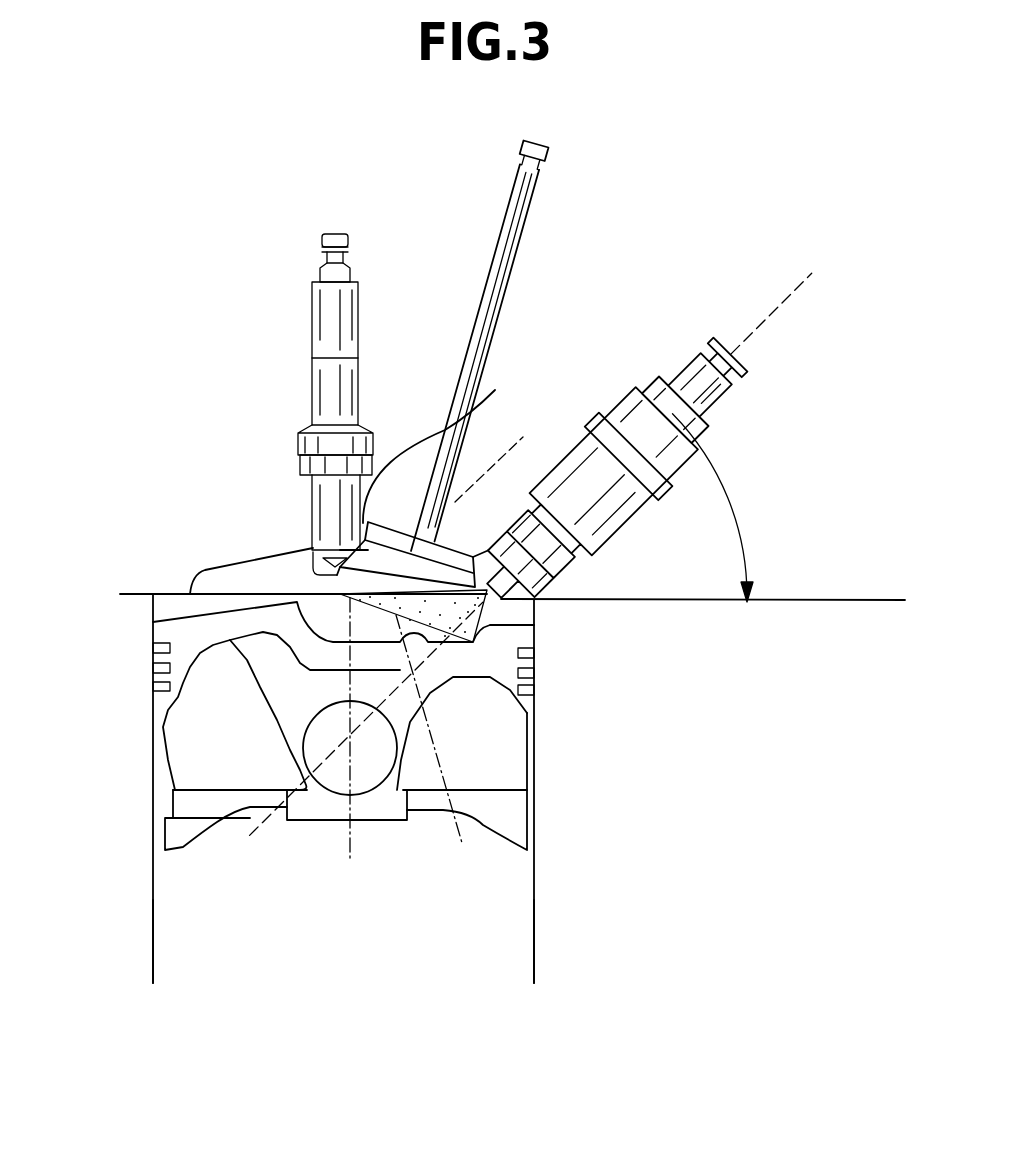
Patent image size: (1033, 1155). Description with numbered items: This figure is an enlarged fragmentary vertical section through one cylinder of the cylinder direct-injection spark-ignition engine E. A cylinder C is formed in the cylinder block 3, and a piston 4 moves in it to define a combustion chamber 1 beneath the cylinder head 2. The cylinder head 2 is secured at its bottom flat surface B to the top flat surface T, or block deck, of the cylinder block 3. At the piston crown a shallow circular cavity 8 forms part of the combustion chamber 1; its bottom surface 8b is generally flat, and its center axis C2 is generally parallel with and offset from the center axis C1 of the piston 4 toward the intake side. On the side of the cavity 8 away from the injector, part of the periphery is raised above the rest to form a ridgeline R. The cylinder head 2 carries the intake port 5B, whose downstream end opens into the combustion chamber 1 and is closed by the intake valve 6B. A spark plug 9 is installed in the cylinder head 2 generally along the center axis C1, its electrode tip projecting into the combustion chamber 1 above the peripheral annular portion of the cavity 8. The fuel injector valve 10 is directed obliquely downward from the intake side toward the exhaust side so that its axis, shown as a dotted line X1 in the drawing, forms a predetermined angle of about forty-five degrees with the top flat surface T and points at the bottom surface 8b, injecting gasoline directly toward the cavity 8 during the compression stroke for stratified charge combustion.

The internal combustion engine E is at (142, 432).
The bottom flat surface B is at (132, 596).
The cylinder head 2 is at (240, 545).
The combustion chamber 1 is at (313, 610).
The cylinder block 3 is at (148, 656).
The cavity 8 is at (325, 672).
The ridgeline R is at (297, 610).
The bottom surface of the cavity 8b is at (420, 640).
The piston 4 is at (513, 640).
The top flat surface of the cylinder block T is at (652, 600).
The engine cylinder C is at (532, 940).
The center axis of the piston C1 is at (350, 845).
The center axis of the cavity C2 is at (440, 747).
The spark plug 9 is at (310, 320).
The second intake port 5B is at (478, 443).
The second intake valve 6B is at (397, 575).
The fuel injector valve 10 is at (612, 522).
The fuel injection direction X1 is at (523, 440).